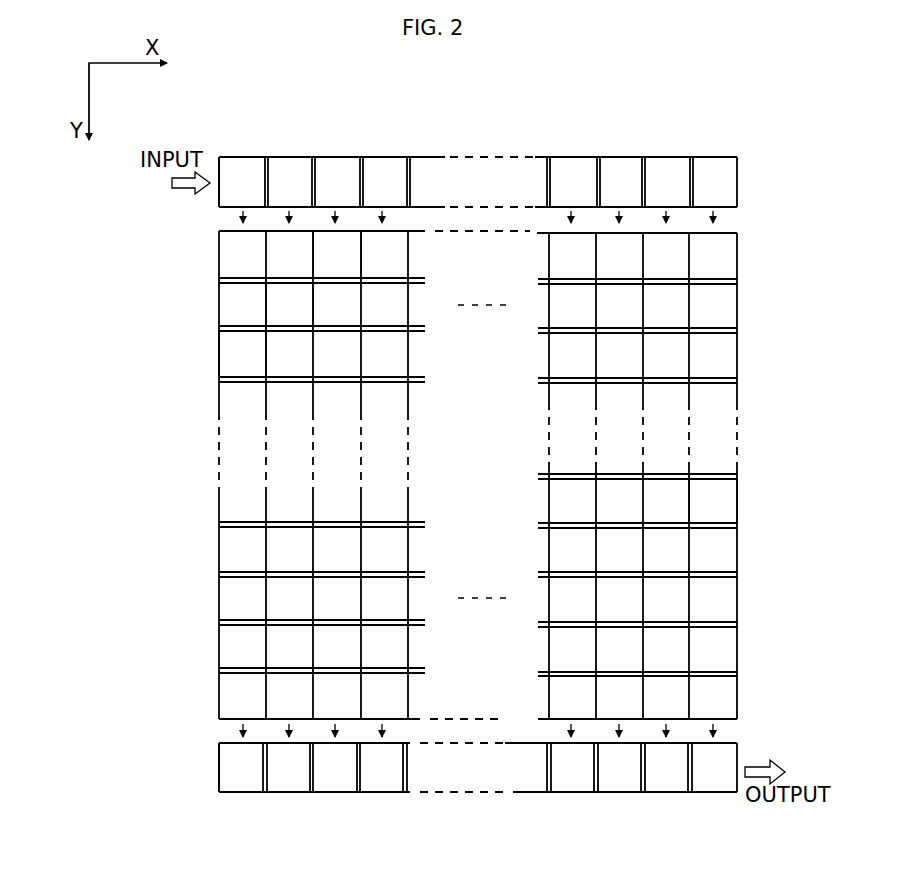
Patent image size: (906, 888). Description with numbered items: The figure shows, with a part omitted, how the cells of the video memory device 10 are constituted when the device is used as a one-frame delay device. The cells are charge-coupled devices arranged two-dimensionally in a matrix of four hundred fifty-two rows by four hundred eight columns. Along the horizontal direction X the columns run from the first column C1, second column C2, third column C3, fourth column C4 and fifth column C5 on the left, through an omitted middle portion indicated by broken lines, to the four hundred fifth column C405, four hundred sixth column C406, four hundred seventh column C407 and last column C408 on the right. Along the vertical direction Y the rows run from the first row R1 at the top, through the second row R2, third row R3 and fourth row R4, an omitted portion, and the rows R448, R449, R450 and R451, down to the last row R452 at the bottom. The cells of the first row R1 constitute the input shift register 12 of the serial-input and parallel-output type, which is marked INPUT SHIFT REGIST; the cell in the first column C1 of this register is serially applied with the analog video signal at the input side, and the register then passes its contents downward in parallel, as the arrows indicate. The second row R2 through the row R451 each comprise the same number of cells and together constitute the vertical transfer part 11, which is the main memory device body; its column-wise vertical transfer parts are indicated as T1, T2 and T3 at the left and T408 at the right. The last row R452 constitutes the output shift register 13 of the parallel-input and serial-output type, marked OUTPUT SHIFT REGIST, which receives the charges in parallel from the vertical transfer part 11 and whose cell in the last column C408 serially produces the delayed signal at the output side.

The video memory device 10 is at (684, 98).
The vertical transfer part 11 is at (744, 402).
The input shift register 12 is at (455, 150).
The output shift register 13 is at (521, 797).
The first row R1 is at (742, 192).
The second row R2 is at (742, 255).
The third row R3 is at (742, 303).
The fourth row R4 is at (742, 364).
The 448th row R448 is at (742, 558).
The 449th row R449 is at (742, 604).
The 450th row R450 is at (742, 653).
The 451st row R451 is at (742, 698).
The 452nd row R452 is at (742, 751).
The first column C1 is at (239, 155).
The second column C2 is at (287, 155).
The third column C3 is at (335, 155).
The fourth column C4 is at (383, 155).
The fifth column C5 is at (432, 155).
The 405th column C405 is at (571, 148).
The 406th column C406 is at (618, 155).
The 407th column C407 is at (666, 148).
The 408th column C408 is at (722, 148).
The vertical transfer part column T1 is at (230, 356).
The vertical transfer part column T2 is at (275, 305).
The vertical transfer part column T3 is at (318, 256).
The vertical transfer part column T408 is at (725, 508).